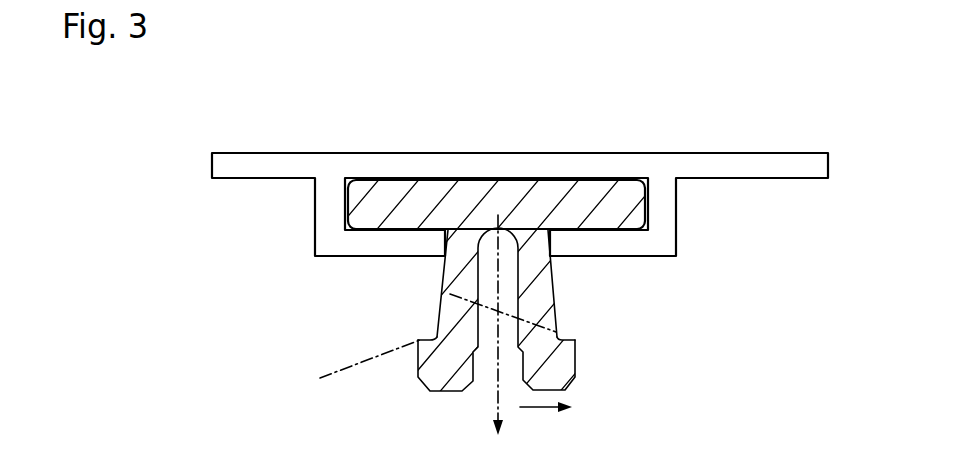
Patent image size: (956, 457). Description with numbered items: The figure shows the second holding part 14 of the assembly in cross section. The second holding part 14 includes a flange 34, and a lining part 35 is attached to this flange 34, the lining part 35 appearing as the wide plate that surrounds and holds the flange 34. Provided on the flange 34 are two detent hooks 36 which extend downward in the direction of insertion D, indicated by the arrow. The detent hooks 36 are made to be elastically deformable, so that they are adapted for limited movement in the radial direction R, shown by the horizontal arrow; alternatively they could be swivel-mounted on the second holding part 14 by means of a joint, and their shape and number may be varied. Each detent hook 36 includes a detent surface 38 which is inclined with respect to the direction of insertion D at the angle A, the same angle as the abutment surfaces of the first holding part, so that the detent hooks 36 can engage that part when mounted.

The second holding part 14 is at (724, 120).
The flange 34 is at (588, 197).
The lining part 35 is at (733, 170).
The detent hooks 36 is at (437, 368).
The detent surface 38 is at (432, 337).
The angle A is at (497, 333).
The direction of insertion D is at (493, 325).
The radial direction R is at (546, 417).